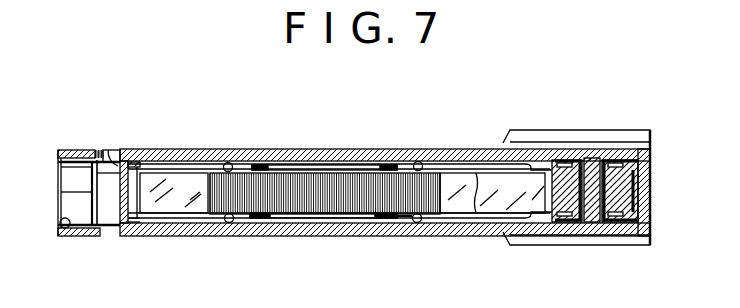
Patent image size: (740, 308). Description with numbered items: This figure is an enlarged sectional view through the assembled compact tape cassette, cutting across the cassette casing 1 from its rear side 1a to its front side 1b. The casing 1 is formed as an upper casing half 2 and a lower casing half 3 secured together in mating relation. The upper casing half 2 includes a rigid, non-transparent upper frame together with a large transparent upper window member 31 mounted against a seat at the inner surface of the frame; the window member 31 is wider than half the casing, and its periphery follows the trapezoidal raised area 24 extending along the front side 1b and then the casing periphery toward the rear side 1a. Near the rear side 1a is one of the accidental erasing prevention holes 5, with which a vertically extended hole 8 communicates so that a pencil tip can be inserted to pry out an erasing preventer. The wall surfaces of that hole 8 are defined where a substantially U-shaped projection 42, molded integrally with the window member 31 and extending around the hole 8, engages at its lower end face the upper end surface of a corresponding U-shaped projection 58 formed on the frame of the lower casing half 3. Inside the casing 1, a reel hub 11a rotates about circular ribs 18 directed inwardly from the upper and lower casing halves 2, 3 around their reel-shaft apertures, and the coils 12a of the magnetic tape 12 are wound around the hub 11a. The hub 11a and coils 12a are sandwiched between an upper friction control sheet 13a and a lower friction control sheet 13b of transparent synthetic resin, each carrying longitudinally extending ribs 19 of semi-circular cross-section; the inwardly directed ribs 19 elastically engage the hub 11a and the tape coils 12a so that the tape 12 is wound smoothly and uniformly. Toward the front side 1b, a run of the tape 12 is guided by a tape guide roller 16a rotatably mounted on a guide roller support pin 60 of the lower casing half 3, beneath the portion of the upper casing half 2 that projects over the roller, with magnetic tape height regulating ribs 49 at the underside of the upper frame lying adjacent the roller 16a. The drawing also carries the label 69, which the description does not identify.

The cassette casing 1 is at (363, 149).
The rear side 1a is at (60, 208).
The front side 1b is at (648, 185).
The upper casing half 2 is at (68, 149).
The lower casing half 3 is at (68, 237).
The accidental erasing prevention hole 5 is at (61, 226).
The vertically extended hole 8 is at (117, 165).
The reel hub 11a is at (378, 222).
The magnetic tape 12 is at (478, 176).
The coils of magnetic tape 12a is at (204, 206).
The upper friction control sheet 13a is at (257, 165).
The lower friction control sheet 13b is at (258, 219).
The tape guide roller 16a is at (641, 177).
The circular ribs 18 is at (318, 166).
The ribs of semi-circular cross-section 19 is at (227, 162).
The trapezoidal raised area 24 is at (571, 130).
The upper window member 31 is at (189, 156).
The U-shaped projection 42 is at (138, 170).
The magnetic tape height regulating ribs 49 is at (528, 166).
The U-shaped projection 58 is at (137, 225).
The guide roller support pin 60 is at (591, 206).
The retaining step 69 is at (529, 222).